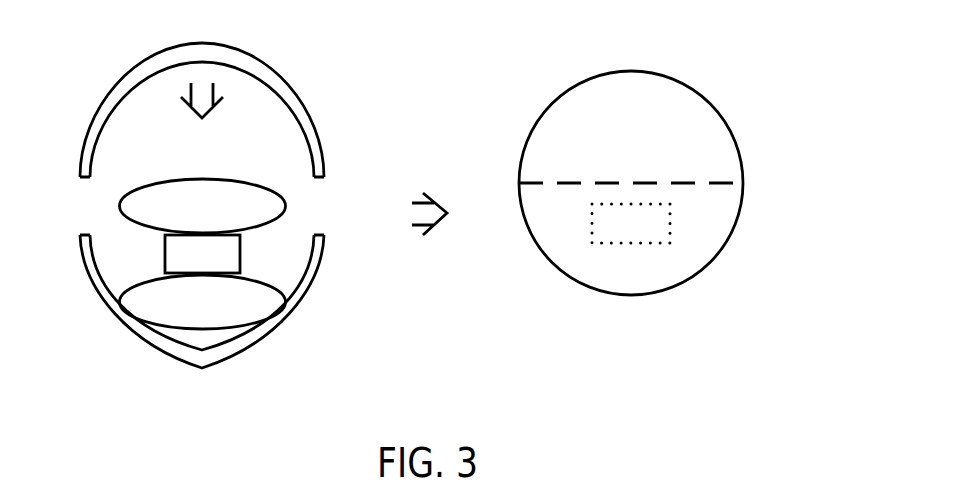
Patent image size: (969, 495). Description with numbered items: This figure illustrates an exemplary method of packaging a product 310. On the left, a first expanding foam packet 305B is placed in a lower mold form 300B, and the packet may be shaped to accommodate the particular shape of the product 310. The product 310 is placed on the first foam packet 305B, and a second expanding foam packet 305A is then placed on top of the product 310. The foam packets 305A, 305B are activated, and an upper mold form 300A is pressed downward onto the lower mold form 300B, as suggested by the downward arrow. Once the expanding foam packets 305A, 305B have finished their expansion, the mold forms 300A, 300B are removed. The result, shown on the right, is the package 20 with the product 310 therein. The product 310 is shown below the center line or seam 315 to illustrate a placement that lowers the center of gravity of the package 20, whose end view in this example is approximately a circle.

The upper mold form 300A is at (174, 49).
The lower mold form 300B is at (152, 350).
The second expanding foam packet 305A is at (235, 218).
The first expanding foam packet 305B is at (235, 315).
The product 310 is at (223, 265).
The package 20 is at (575, 80).
The center line or seam 315 is at (745, 184).